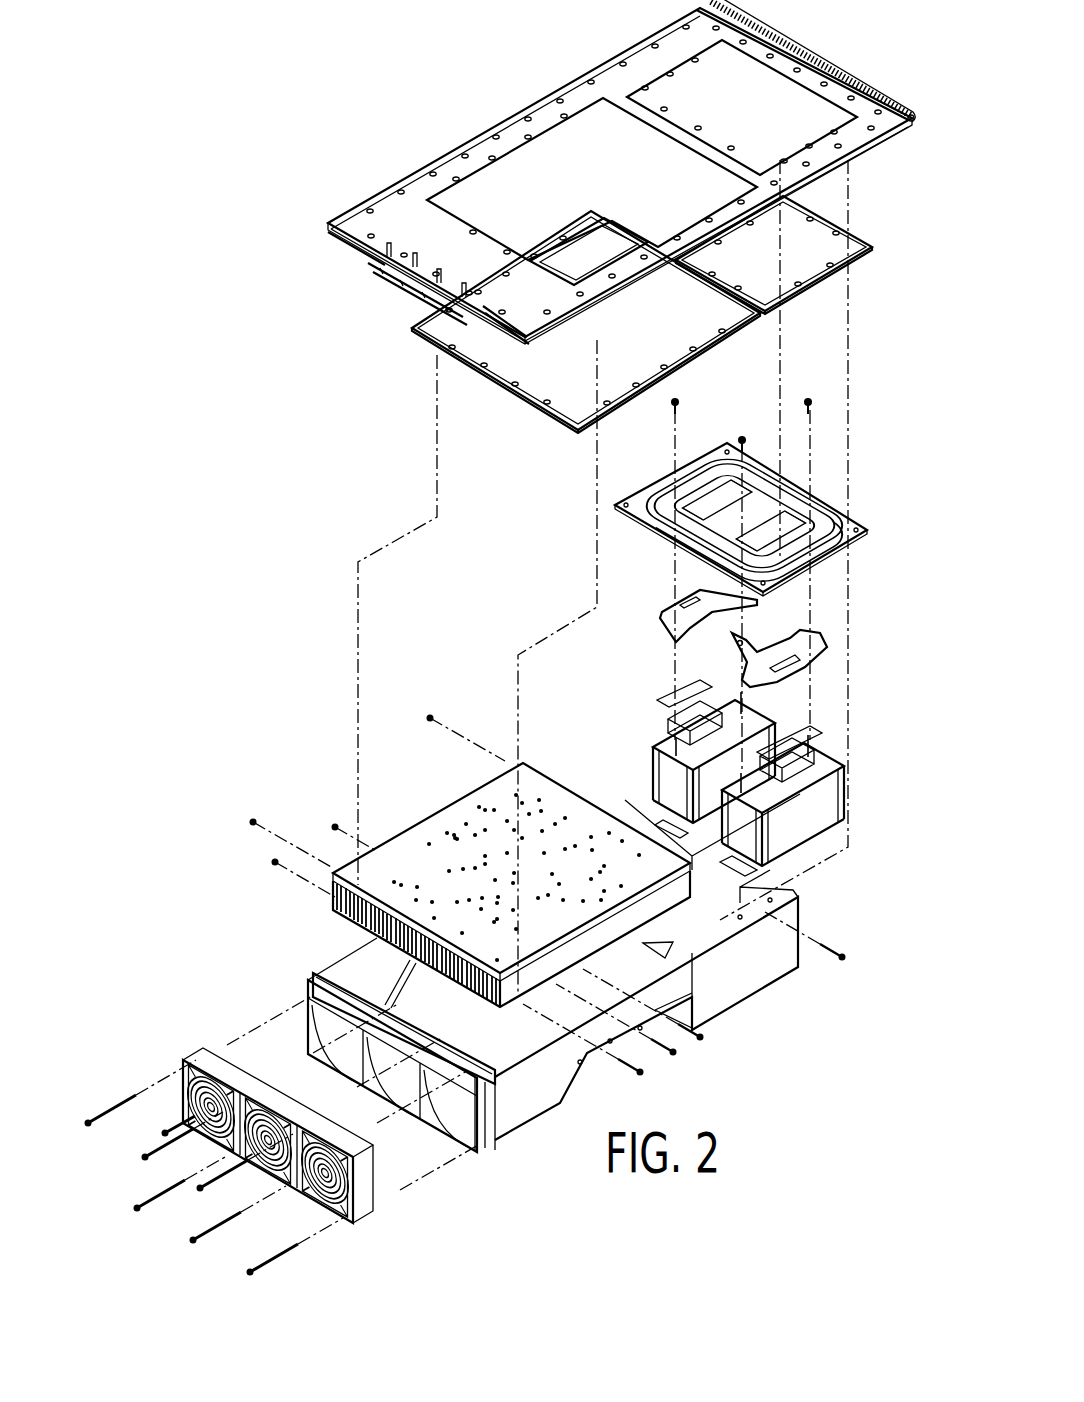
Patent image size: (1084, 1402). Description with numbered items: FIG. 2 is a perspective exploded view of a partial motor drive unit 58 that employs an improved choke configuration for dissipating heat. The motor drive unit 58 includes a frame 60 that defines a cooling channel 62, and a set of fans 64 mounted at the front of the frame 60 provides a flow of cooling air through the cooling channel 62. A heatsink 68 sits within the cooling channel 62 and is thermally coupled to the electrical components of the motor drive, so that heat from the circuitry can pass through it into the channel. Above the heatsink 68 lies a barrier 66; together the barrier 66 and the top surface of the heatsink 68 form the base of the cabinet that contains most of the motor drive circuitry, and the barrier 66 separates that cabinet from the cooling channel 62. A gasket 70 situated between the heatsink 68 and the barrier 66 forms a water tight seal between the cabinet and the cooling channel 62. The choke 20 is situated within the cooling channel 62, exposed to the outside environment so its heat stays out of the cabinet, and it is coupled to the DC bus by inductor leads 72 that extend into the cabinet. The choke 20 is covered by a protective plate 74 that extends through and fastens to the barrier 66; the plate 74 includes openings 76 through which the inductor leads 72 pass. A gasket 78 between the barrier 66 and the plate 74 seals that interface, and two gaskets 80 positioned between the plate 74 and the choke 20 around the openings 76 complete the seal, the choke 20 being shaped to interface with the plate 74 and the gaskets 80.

The motor drive unit 58 is at (289, 127).
The barrier 66 is at (418, 188).
The gasket 70 is at (418, 338).
The gasket 78 is at (852, 250).
The protective plate 74 is at (765, 497).
The openings 76 is at (709, 452).
The gaskets 80 is at (662, 613).
The inductor leads 72 is at (683, 700).
The choke 20 is at (771, 715).
The heatsink 68 is at (453, 810).
The cooling channel 62 is at (465, 995).
The frame 60 is at (745, 975).
The fans 64 is at (362, 1212).